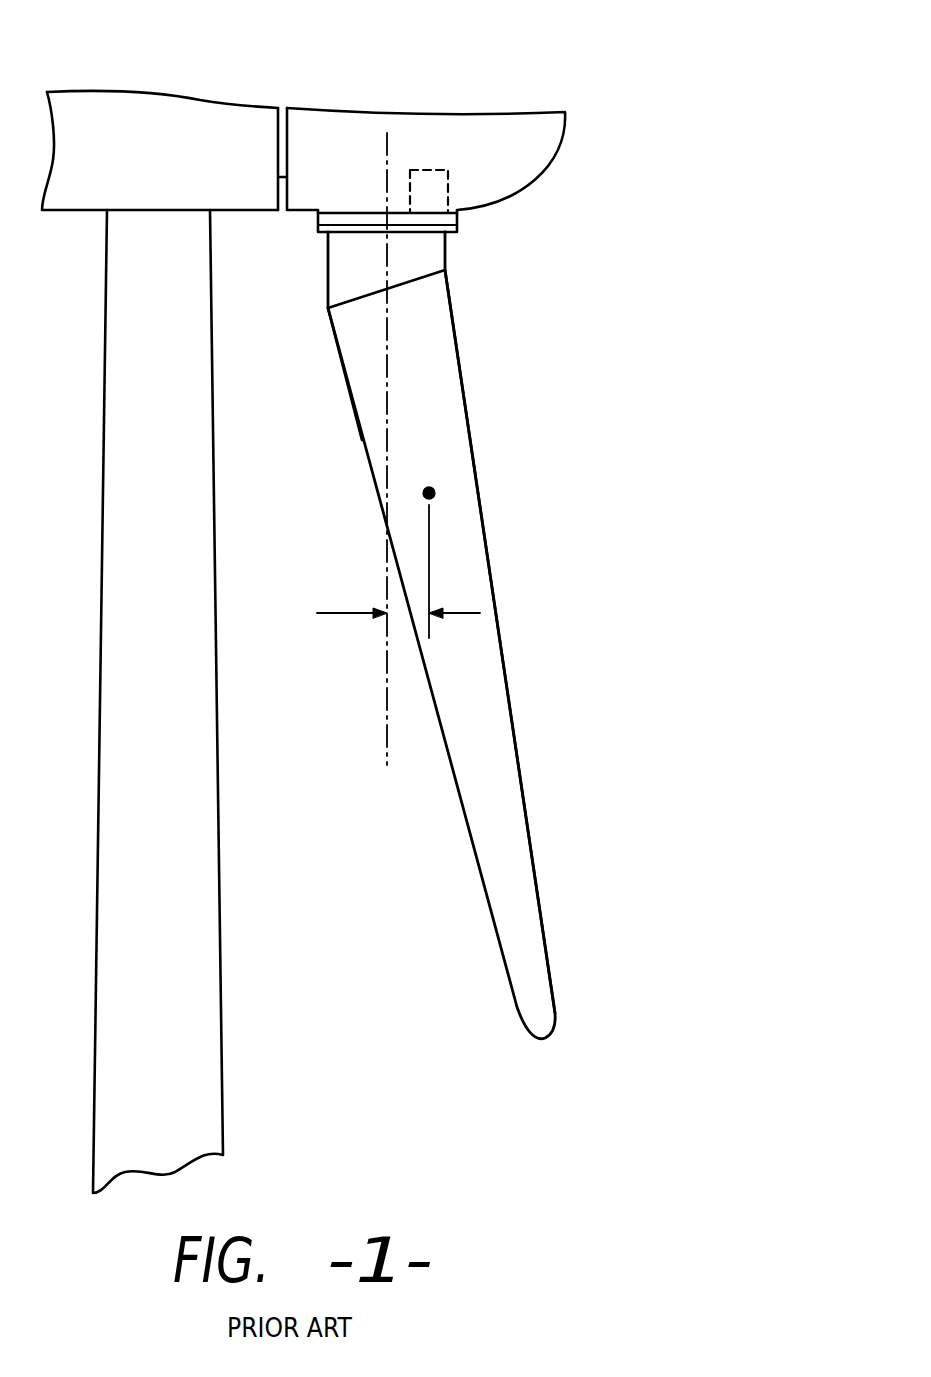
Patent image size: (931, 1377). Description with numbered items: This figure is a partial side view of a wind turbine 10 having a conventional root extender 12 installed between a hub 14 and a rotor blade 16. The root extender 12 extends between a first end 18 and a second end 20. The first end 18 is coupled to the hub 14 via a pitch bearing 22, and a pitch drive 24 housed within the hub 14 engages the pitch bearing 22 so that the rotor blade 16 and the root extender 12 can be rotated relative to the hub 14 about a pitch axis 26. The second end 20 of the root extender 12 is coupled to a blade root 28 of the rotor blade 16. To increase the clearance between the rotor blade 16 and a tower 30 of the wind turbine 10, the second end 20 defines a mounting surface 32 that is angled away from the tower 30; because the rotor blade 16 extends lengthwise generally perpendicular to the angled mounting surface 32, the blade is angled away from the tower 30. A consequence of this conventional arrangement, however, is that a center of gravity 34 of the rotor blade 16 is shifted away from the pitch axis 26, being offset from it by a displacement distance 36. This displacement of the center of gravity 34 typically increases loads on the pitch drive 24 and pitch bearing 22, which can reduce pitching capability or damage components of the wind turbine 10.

The wind turbine 10 is at (549, 73).
The root extender 12 is at (329, 282).
The hub 14 is at (545, 170).
The rotor blade 16 is at (518, 745).
The first end 18 is at (447, 242).
The second end 20 is at (447, 260).
The pitch bearing 22 is at (312, 223).
The pitch drive 24 is at (430, 168).
The pitch axis 26 is at (387, 722).
The blade root 28 is at (333, 332).
The tower 30 is at (221, 870).
The mounting surface 32 is at (408, 285).
The center of gravity 34 is at (432, 488).
The displacement distance 36 is at (338, 610).